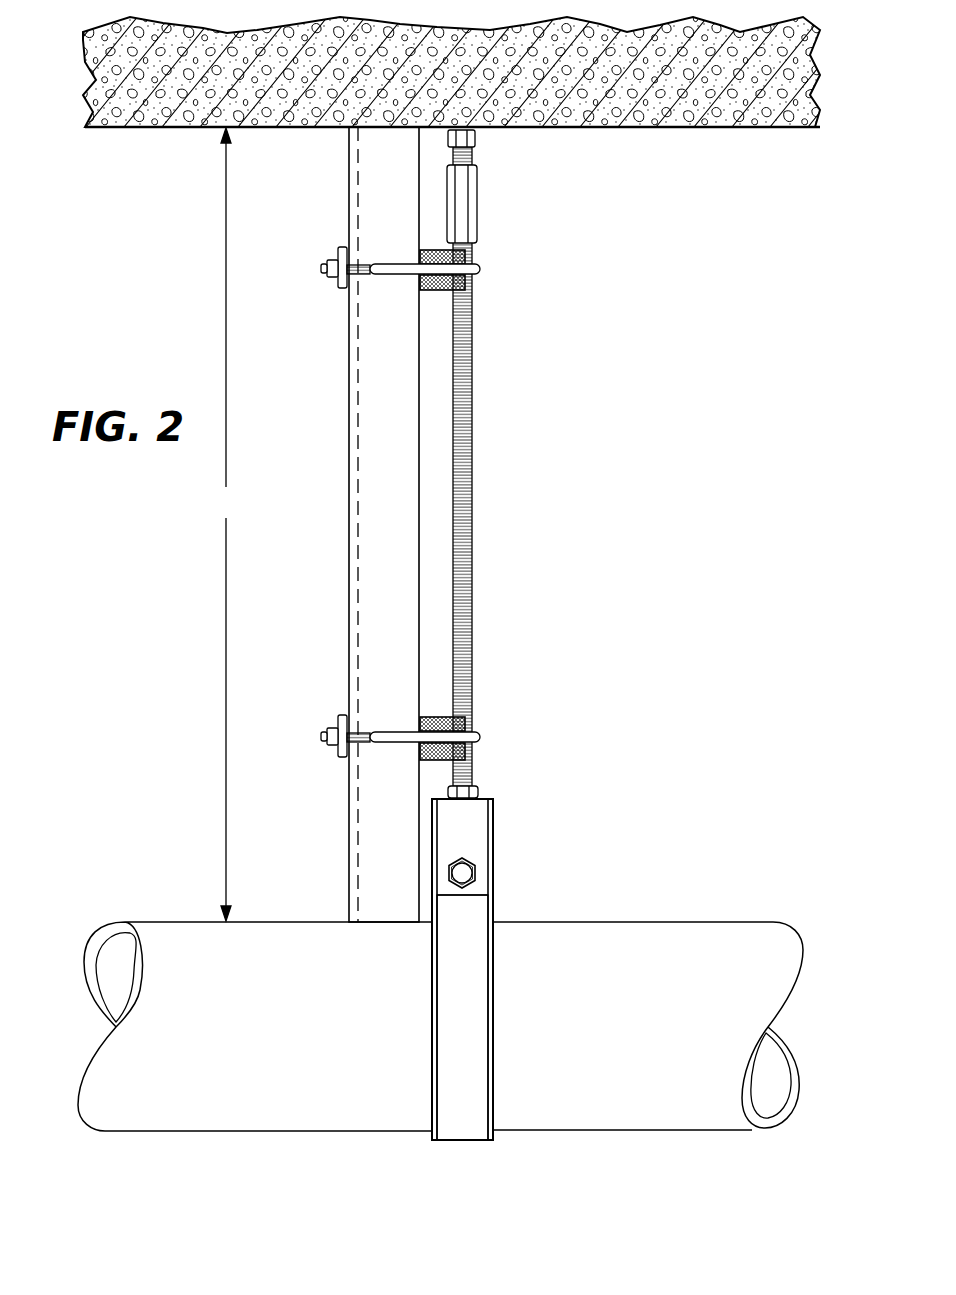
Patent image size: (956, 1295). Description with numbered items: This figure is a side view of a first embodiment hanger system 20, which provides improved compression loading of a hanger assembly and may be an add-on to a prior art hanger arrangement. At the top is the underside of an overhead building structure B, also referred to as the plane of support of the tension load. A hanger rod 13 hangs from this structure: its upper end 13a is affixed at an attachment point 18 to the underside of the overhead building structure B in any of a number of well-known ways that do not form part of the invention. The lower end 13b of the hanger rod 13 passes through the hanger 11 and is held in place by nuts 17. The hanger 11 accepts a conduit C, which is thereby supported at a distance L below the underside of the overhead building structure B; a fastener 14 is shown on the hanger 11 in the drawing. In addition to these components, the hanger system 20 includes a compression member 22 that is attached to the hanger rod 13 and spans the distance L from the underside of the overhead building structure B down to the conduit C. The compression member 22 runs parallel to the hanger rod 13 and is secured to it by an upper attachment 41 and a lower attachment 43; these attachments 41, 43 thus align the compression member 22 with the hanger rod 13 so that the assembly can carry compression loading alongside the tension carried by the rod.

The overhead building structure B is at (618, 128).
The conduit C is at (678, 930).
The distance L is at (225, 524).
The hanger 11 is at (499, 815).
The hanger rod 13 is at (473, 598).
The upper end 13a is at (593, 201).
The lower end 13b is at (594, 826).
The fastener 14 is at (471, 871).
The nuts 17 is at (478, 787).
The attachment point 18 is at (477, 130).
The hanger system 20 is at (714, 358).
The compression member 22 is at (349, 520).
The upper attachment 41 is at (487, 293).
The lower attachment 43 is at (486, 722).